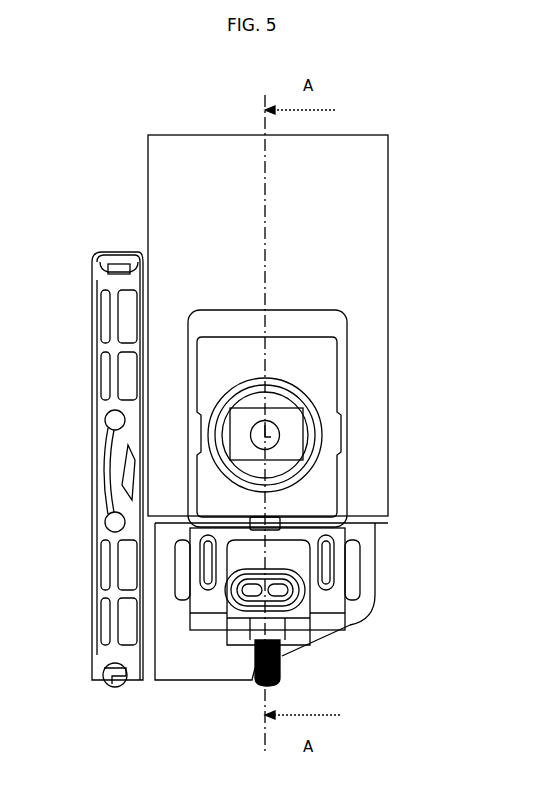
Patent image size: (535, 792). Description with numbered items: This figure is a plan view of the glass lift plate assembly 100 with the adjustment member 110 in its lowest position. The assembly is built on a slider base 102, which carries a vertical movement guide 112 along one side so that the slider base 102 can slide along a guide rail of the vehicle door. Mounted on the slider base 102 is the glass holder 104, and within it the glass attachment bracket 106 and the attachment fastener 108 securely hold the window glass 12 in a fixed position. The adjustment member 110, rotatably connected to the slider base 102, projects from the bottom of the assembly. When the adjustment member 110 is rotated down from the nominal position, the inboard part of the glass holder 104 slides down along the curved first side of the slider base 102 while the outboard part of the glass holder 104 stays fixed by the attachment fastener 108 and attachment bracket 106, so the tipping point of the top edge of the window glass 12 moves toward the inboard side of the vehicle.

The glass lift plate assembly 100 is at (131, 135).
The window glass 12 is at (363, 205).
The slider base 102 is at (375, 548).
The glass holder 104 is at (302, 327).
The glass attachment bracket 106 is at (310, 363).
The attachment fastener 108 is at (283, 437).
The adjustment member 110 is at (255, 670).
The vertical movement guide 112 is at (108, 662).